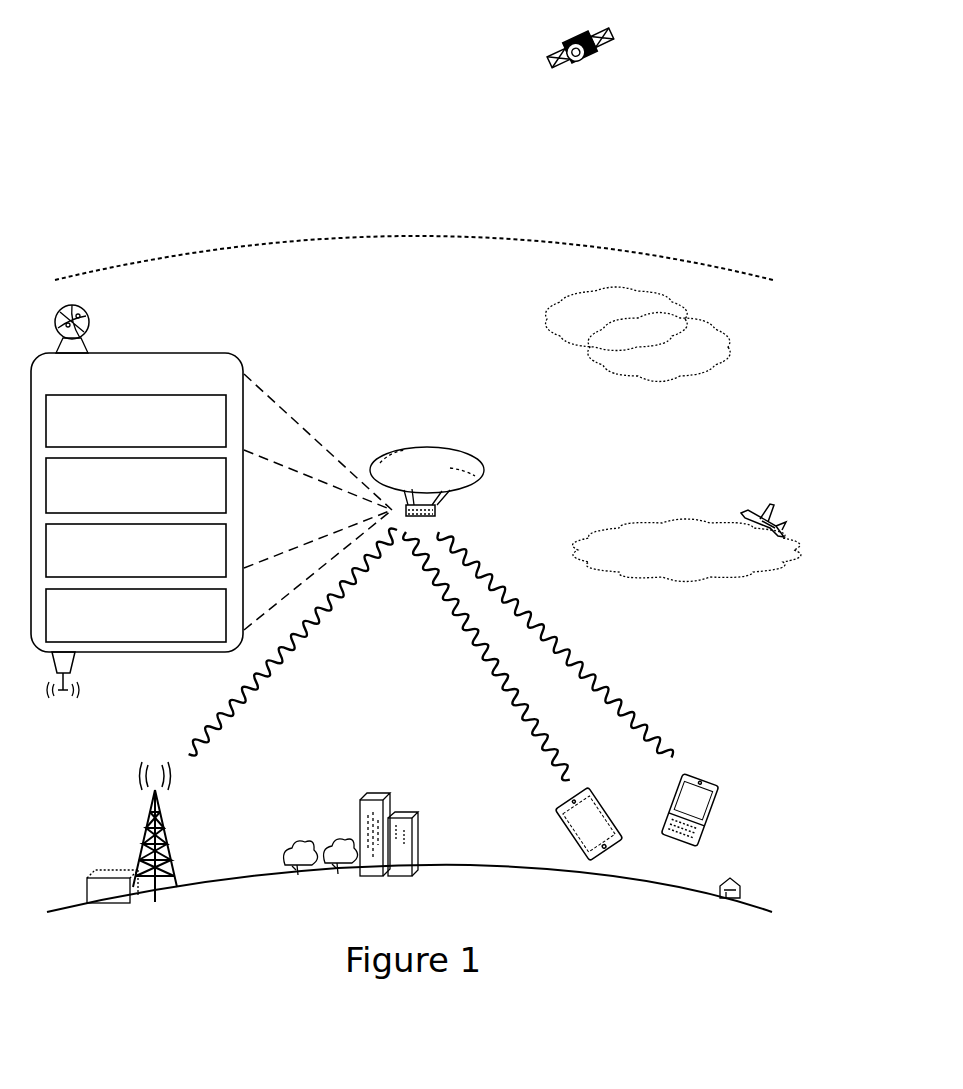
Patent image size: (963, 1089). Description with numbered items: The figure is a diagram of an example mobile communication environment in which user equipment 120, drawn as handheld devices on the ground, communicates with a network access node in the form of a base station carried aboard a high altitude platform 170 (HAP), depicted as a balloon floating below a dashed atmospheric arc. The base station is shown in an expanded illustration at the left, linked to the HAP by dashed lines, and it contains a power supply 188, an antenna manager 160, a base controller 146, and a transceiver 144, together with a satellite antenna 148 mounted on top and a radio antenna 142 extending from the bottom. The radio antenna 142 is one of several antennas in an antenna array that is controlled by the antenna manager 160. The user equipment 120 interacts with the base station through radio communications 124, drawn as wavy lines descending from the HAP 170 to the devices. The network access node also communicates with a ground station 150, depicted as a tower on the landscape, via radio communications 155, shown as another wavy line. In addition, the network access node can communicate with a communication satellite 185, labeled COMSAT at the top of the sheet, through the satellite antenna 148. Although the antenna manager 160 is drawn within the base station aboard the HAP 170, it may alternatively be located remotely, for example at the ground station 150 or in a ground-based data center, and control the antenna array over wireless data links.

The user equipment 120 is at (574, 841).
The radio communications 124 is at (527, 702).
The radio antenna 142 is at (78, 676).
The transceiver 144 is at (136, 615).
The base controller 146 is at (136, 550).
The satellite antenna 148 is at (92, 322).
The ground station 150 is at (172, 806).
The radio communications 155 is at (280, 683).
The antenna manager 160 is at (136, 485).
The high altitude platform 170 is at (434, 456).
The communication satellite 185 is at (600, 72).
The power supply 188 is at (136, 421).